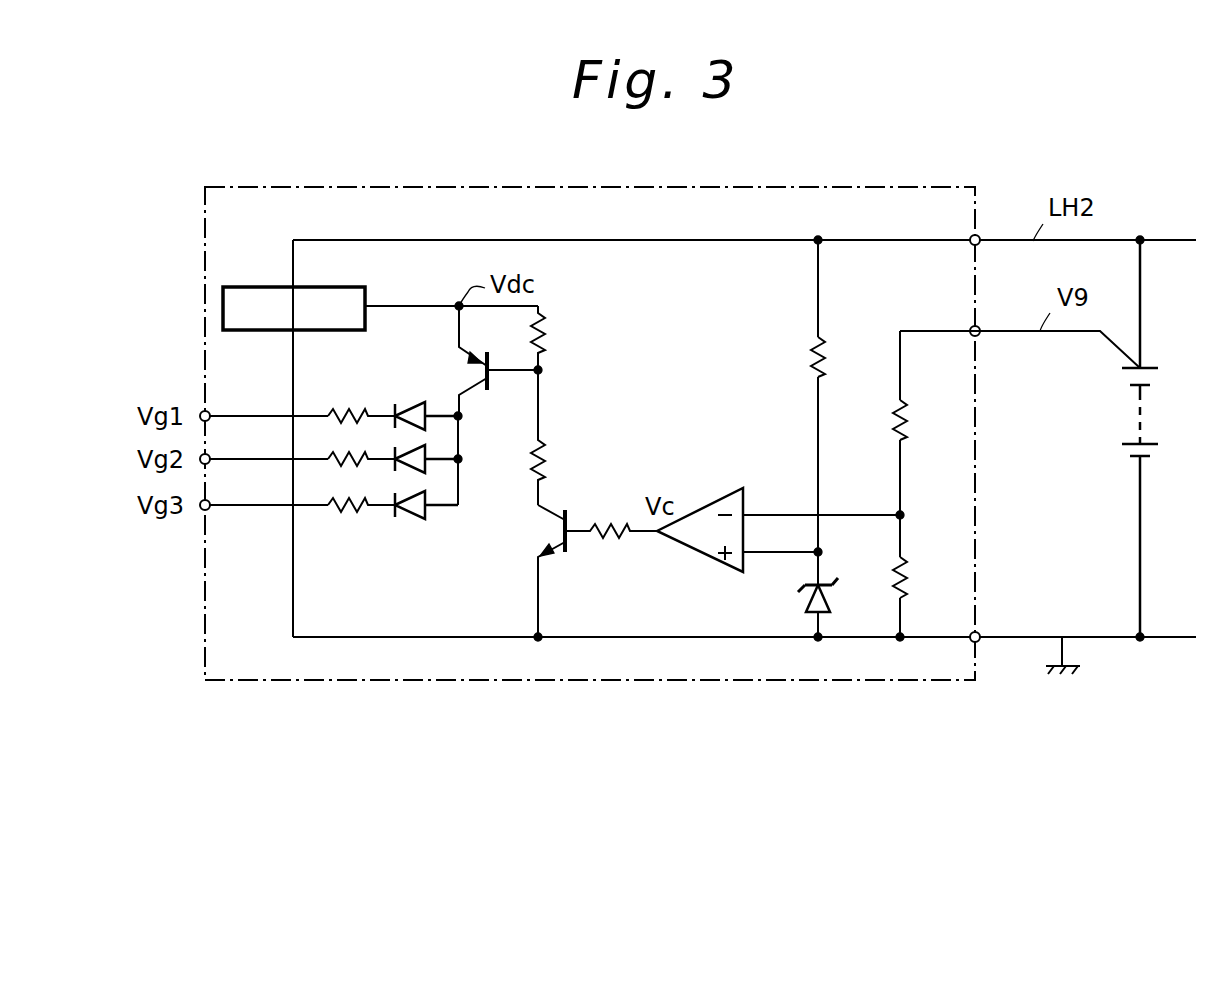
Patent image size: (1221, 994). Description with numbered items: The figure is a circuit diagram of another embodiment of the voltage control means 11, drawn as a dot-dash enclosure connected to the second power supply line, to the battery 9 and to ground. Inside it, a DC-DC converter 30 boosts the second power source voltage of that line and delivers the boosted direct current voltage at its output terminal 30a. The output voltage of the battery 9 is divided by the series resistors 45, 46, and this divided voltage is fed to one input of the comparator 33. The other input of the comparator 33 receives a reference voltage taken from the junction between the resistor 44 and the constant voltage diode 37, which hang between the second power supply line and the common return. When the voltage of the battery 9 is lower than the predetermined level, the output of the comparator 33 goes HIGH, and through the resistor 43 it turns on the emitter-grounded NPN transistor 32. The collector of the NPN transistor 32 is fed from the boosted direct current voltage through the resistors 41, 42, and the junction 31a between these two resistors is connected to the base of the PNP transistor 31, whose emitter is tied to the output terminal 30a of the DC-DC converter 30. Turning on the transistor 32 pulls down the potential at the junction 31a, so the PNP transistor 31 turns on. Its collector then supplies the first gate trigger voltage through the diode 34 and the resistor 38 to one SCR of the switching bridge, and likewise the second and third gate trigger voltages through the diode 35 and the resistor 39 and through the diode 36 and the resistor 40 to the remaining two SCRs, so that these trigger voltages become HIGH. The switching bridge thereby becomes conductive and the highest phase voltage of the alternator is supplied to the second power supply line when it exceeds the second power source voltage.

The battery 9 is at (1160, 428).
The voltage control means 11 is at (410, 680).
The DC-DC converter 30 is at (256, 330).
The output terminal 30a is at (367, 304).
The PNP transistor 31 is at (478, 373).
The junction 31a is at (545, 370).
The NPN transistor 32 is at (552, 532).
The comparator 33 is at (705, 552).
The diode 34 is at (410, 410).
The diode 35 is at (418, 443).
The diode 36 is at (412, 512).
The constant voltage diode 37 is at (800, 603).
The resistor 38 is at (335, 407).
The resistor 39 is at (335, 457).
The resistor 40 is at (342, 510).
The resistor 41 is at (547, 335).
The resistor 42 is at (547, 477).
The resistor 43 is at (603, 540).
The resistor 44 is at (812, 344).
The resistor 45 is at (893, 415).
The resistor 46 is at (907, 583).